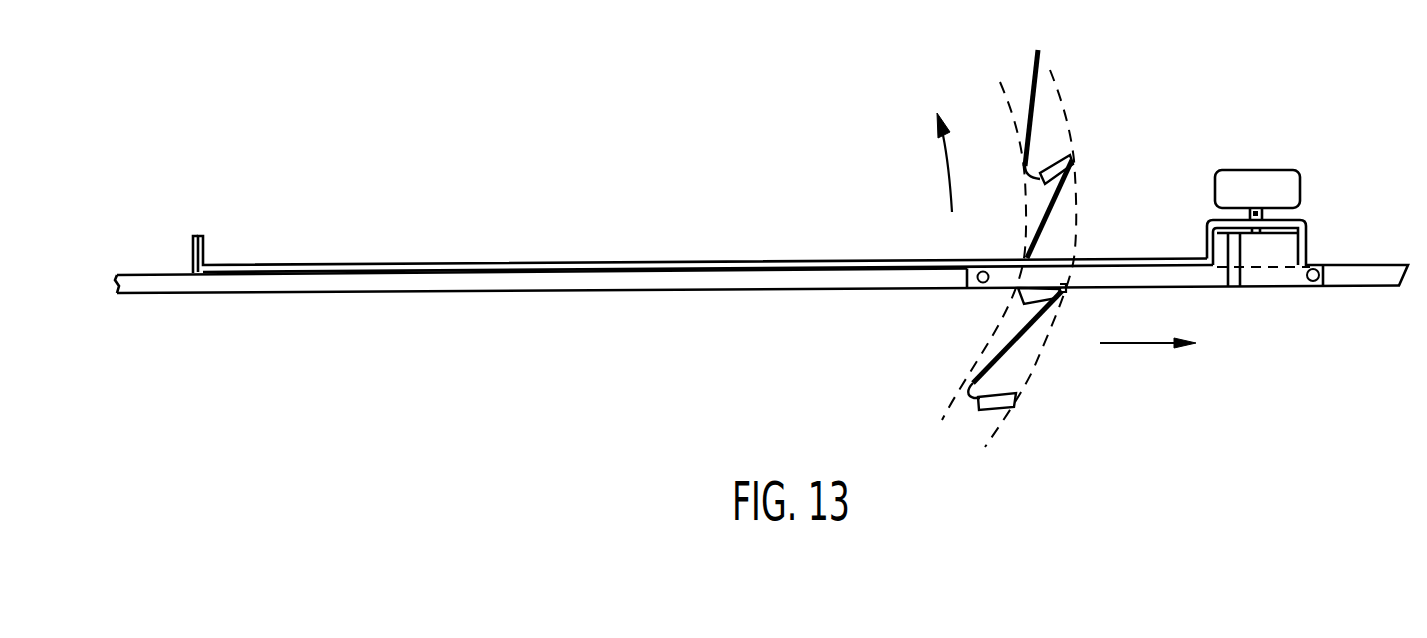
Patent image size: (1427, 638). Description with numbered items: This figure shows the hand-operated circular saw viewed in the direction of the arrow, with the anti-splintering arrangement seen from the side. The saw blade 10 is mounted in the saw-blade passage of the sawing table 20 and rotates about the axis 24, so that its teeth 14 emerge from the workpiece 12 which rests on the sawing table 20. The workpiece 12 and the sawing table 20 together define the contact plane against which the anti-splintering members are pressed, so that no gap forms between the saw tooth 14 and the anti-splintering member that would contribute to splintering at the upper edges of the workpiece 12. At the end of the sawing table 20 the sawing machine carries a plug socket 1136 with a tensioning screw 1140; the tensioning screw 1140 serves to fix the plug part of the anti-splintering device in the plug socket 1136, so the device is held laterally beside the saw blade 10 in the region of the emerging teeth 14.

The saw blade 10 is at (1044, 108).
The workpiece 12 is at (277, 286).
The teeth of the saw blade 14 is at (1064, 291).
The sawing table 20 is at (338, 265).
The axis 24 is at (715, 198).
The plug socket 1136 is at (1307, 248).
The tensioning screw 1140 is at (1272, 172).